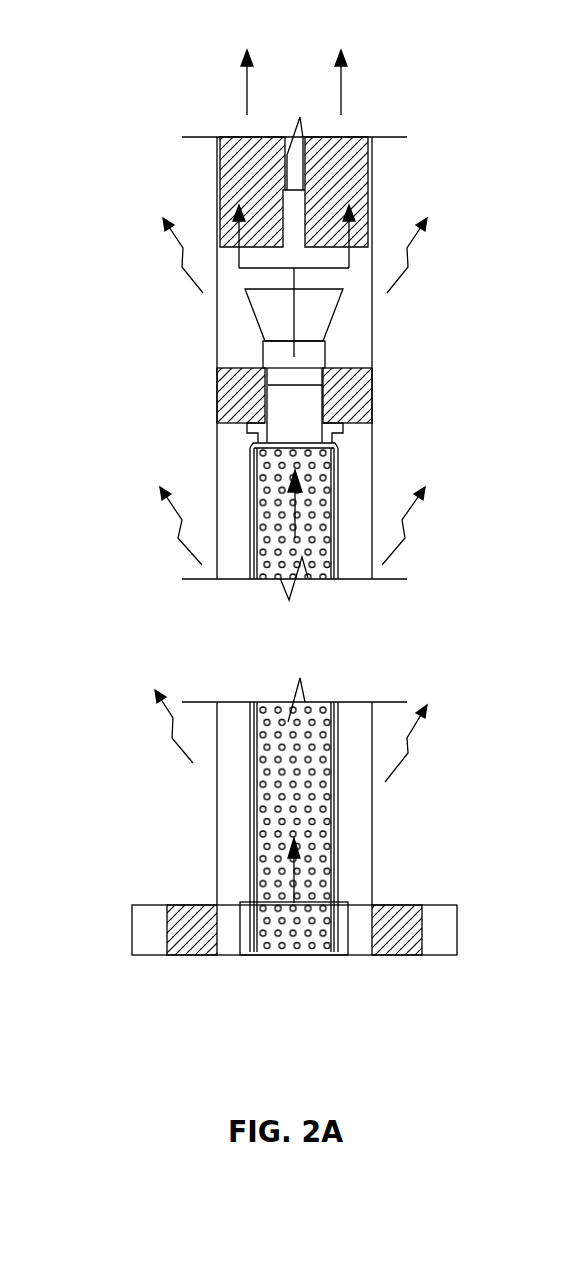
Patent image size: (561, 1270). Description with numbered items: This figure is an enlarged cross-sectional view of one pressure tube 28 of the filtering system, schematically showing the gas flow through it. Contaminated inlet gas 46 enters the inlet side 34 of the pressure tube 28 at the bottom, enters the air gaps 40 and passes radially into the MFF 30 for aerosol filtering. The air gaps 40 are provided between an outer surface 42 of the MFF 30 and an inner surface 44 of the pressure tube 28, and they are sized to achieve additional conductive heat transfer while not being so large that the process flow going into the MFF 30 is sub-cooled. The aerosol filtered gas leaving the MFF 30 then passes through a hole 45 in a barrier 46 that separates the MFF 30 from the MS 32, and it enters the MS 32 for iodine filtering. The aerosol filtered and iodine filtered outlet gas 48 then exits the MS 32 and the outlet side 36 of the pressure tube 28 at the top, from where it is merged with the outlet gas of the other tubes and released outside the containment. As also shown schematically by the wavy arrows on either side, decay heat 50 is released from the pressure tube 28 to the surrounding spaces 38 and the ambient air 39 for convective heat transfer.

The pressure tube 28 is at (120, 1013).
The MFF 30 is at (306, 551).
The MS 32 is at (355, 163).
The inlet side 34 is at (392, 990).
The outlet side 36 is at (140, 93).
The spaces 38 is at (390, 331).
The ambient air 39 is at (155, 390).
The air gaps 40 is at (227, 865).
The outer surface 42 is at (338, 857).
The inner surface 44 is at (215, 797).
The hole 45 is at (303, 417).
The barrier 46 is at (355, 390).
The outlet gas 48 is at (247, 97).
The decay heat 50 is at (178, 530).